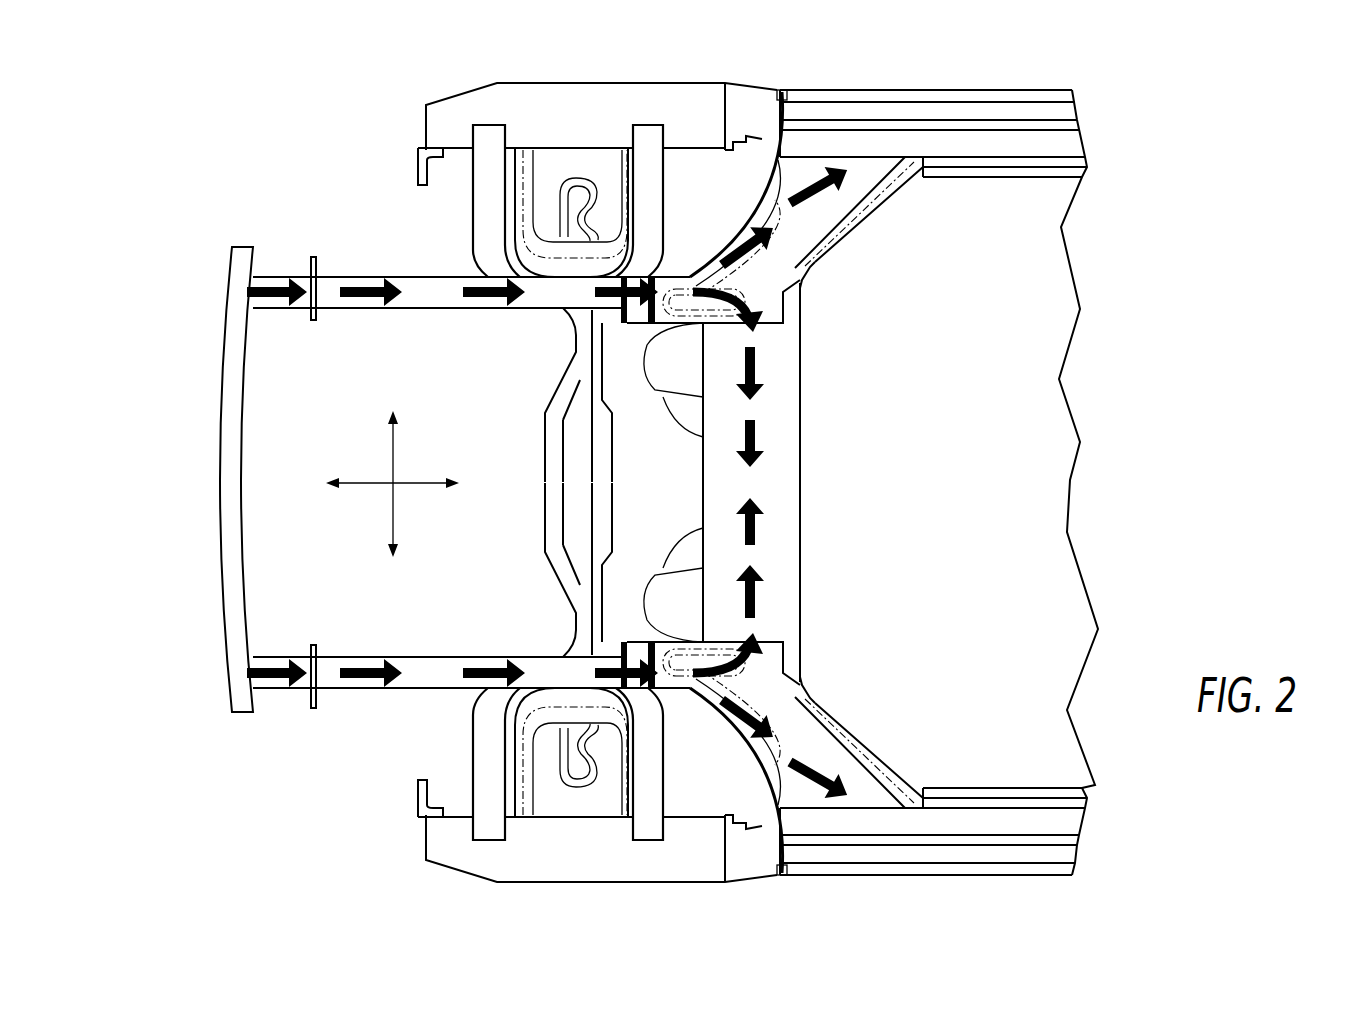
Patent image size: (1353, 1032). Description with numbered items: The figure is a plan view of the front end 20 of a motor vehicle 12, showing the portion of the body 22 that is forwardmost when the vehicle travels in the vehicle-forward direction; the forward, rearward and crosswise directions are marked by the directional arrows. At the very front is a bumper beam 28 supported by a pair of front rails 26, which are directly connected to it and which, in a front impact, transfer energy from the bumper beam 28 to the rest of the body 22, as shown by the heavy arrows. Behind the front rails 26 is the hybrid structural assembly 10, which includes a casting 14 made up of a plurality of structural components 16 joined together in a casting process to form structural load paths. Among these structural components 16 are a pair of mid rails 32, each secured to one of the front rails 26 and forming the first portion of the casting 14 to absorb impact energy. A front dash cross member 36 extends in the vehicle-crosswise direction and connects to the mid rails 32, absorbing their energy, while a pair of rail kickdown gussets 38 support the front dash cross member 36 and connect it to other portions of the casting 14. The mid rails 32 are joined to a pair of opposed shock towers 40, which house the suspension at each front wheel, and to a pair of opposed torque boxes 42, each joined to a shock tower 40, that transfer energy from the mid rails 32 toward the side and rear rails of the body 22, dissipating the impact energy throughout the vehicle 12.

The hybrid structural assembly 10 is at (600, 475).
The motor vehicle 12 is at (972, 71).
The casting 14 is at (461, 85).
The structural components 16 is at (562, 168).
The front end 20 is at (226, 486).
The body 22 is at (970, 855).
The rails 26 is at (326, 283).
The bumper beam 28 is at (232, 383).
The mid rails 32 is at (590, 325).
The front dash cross member 36 is at (783, 497).
The rail kickdown gussets 38 is at (775, 304).
The shock towers 40 is at (582, 175).
The torque boxes 42 is at (878, 163).